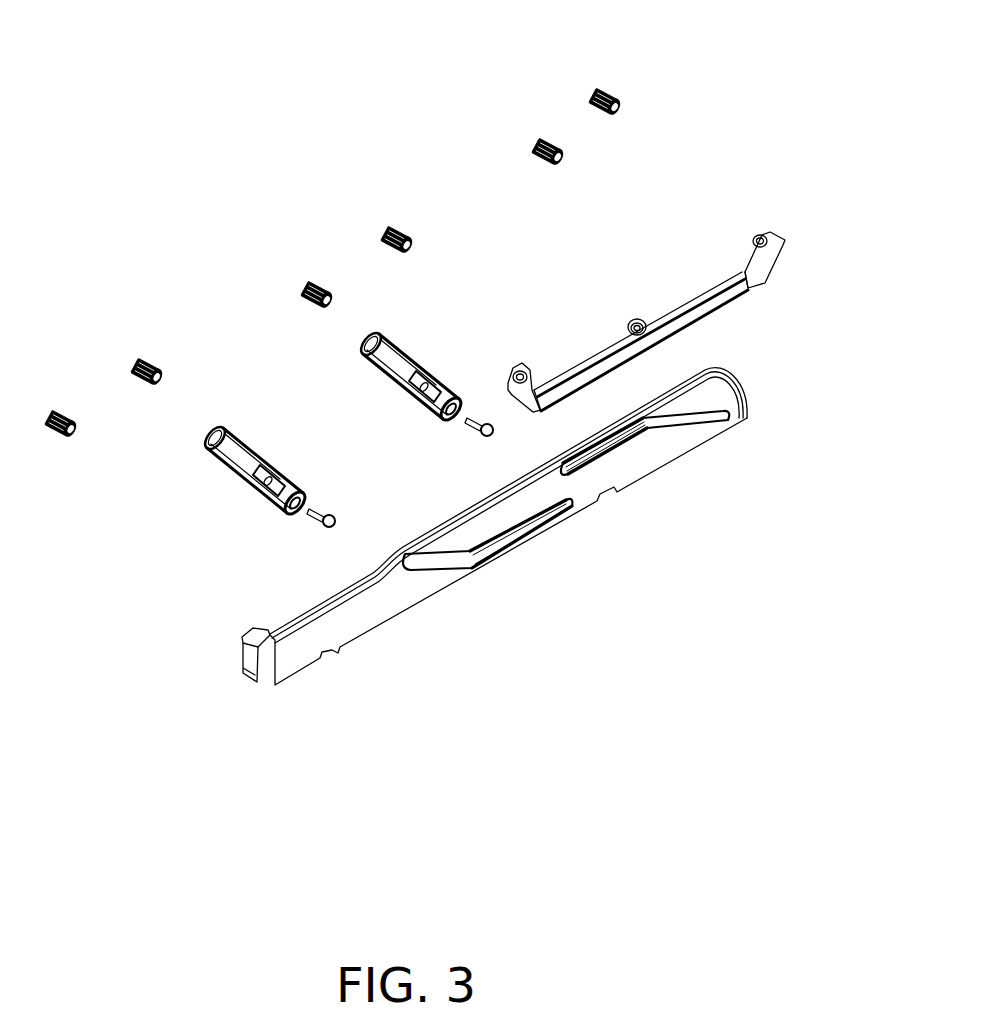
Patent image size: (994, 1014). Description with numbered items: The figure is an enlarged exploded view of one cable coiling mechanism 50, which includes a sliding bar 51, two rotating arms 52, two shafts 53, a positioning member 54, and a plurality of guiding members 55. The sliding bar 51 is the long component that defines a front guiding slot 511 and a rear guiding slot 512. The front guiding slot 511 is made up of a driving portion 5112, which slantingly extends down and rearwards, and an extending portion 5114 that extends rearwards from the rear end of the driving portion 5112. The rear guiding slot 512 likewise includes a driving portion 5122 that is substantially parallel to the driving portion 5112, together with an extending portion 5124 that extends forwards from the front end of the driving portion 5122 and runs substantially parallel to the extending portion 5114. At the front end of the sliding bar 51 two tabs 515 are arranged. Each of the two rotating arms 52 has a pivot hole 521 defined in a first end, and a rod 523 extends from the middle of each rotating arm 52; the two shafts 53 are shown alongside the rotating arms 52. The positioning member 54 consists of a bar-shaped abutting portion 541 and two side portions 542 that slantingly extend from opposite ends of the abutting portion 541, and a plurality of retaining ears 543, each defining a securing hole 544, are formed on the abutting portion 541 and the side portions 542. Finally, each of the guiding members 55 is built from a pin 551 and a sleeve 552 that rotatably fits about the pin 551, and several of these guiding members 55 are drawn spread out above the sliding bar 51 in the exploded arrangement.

The cable coiling mechanism 50 is at (226, 44).
The sliding bar 51 is at (355, 620).
The front guiding slot 511 is at (583, 617).
The driving portion 5112 is at (433, 560).
The extending portion 5114 is at (518, 535).
The rear guiding slot 512 is at (765, 520).
The driving portion 5122 is at (690, 421).
The extending portion 5124 is at (607, 445).
The tab 515 is at (243, 673).
The rotating arm 52 is at (240, 450).
The pivot hole 521 is at (290, 513).
The rod 523 is at (285, 473).
The shaft 53 is at (342, 523).
The positioning member 54 is at (673, 285).
The abutting portion 541 is at (722, 305).
The side portion 542 is at (760, 268).
The retaining ear 543 is at (510, 383).
The securing hole 544 is at (530, 373).
The guiding member 55 is at (145, 503).
The pin 551 is at (77, 428).
The sleeve 552 is at (55, 432).